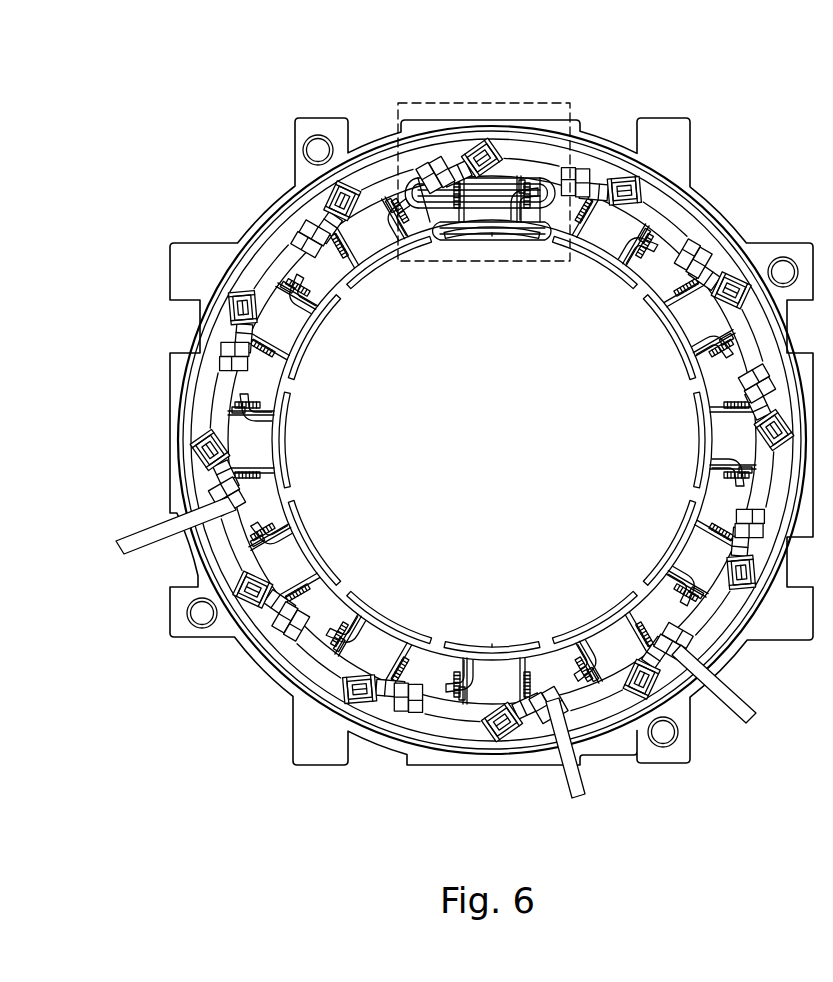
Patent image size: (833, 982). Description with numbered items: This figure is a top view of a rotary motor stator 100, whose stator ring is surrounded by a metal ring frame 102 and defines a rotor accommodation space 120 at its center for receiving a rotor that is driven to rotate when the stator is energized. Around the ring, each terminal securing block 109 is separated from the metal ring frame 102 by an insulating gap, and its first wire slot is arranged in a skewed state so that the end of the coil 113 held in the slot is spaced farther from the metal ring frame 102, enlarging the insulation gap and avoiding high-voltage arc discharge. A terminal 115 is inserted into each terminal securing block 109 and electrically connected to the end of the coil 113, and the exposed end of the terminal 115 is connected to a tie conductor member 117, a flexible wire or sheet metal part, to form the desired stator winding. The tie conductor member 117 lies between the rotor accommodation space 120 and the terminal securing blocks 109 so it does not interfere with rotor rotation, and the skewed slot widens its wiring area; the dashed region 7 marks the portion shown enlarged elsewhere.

The rotary motor stator 100 is at (94, 34).
The metal ring frame 102 is at (667, 118).
The detail region shown in FIG. 7 is at (513, 101).
The terminal securing block 109 is at (472, 140).
The coil 113 is at (494, 200).
The terminal 115 is at (465, 138).
The tie conductor member 117 is at (432, 226).
The rotor accommodation space 120 is at (507, 456).